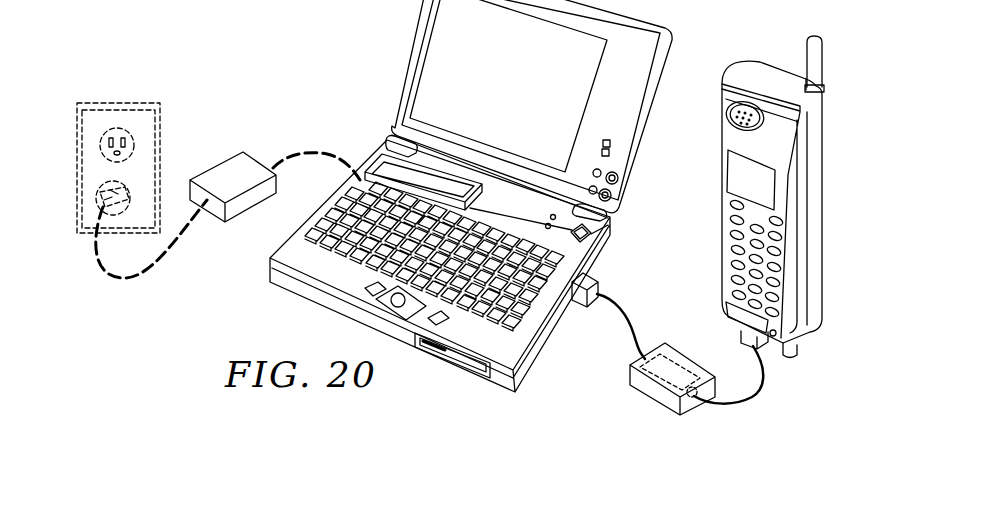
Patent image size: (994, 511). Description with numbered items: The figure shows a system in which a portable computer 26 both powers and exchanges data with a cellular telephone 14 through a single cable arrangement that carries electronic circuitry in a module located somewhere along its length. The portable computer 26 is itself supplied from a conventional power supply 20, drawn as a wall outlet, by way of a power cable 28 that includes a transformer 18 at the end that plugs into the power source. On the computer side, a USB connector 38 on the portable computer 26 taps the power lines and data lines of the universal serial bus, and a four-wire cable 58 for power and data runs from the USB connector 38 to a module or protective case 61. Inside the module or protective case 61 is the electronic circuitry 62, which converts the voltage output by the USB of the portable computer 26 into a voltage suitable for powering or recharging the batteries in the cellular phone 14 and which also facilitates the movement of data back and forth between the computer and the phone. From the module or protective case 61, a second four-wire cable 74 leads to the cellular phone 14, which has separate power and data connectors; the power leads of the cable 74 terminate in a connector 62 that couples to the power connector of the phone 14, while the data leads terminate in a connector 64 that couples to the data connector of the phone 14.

The cellular telephone 14 is at (758, 64).
The transformer 18 is at (232, 165).
The conventional power supply 20 is at (118, 128).
The portable computer 26 is at (527, 97).
The power cable 28 is at (124, 283).
The USB connector 38 is at (599, 279).
The four-wire cable 58 is at (622, 318).
The module or protective case 61 is at (655, 402).
The electronic circuitry 62 is at (677, 360).
The connector 64 is at (748, 334).
The second four-wire cable 74 is at (742, 404).